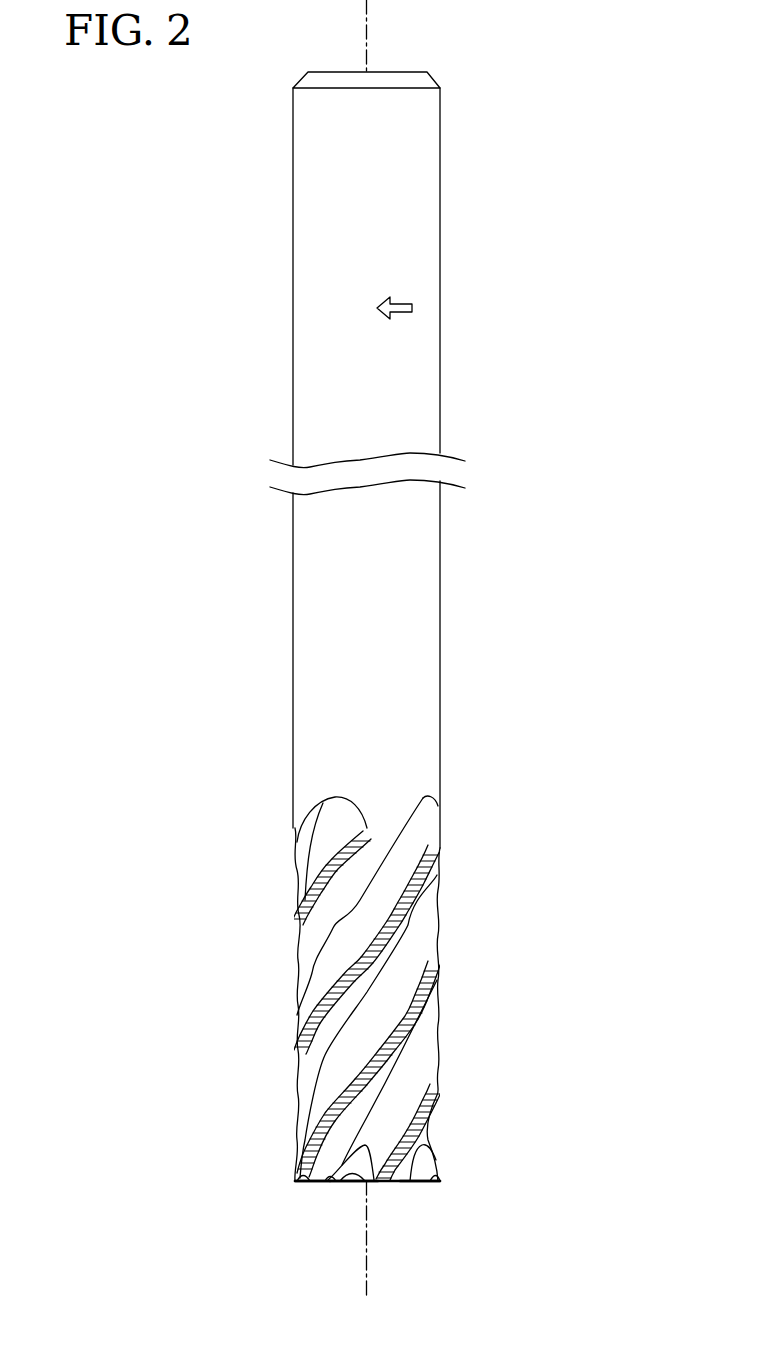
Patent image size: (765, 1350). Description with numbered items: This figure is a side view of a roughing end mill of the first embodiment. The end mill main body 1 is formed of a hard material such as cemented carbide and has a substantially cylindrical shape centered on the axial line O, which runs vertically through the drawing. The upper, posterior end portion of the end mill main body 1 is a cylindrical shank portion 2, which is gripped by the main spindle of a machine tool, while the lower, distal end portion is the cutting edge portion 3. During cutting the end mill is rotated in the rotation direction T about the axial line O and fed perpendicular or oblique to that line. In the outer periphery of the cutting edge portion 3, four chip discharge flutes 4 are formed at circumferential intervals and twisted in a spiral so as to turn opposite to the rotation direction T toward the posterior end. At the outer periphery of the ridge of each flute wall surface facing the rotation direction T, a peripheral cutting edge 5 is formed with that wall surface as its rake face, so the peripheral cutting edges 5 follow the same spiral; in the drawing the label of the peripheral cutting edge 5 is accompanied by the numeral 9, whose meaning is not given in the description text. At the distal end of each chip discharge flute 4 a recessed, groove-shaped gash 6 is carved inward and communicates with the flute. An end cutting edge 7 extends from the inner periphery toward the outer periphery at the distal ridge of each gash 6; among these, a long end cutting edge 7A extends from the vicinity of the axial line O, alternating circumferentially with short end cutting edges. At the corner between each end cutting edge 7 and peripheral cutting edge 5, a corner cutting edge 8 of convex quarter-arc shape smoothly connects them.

The end mill main body 1 is at (120, 663).
The shank portion 2 is at (258, 650).
The cutting edge portion 3 is at (327, 992).
The chip discharge flute 4 is at (313, 853).
The peripheral cutting edge 5 is at (309, 1008).
The nick (serration) of peripheral cutting edge 9 is at (335, 978).
The gash 6 is at (352, 1168).
The end cutting edge 7 is at (334, 1227).
The long end cutting edge 7A is at (354, 1178).
The corner cutting edge 8 is at (303, 1182).
The axial line O is at (366, 20).
The rotation direction of the end mill T is at (394, 296).